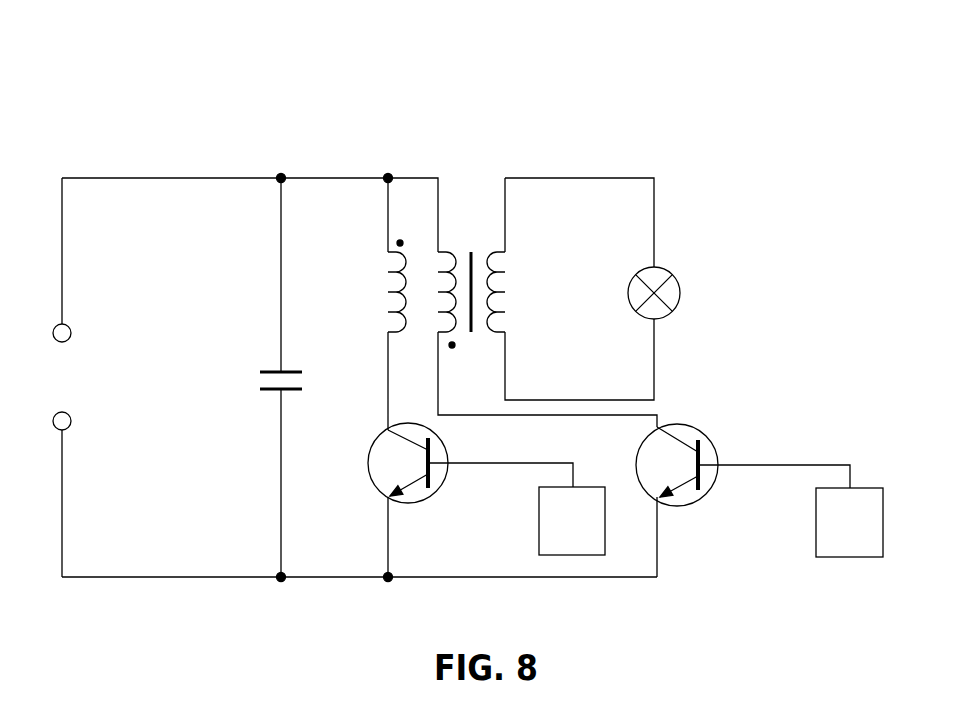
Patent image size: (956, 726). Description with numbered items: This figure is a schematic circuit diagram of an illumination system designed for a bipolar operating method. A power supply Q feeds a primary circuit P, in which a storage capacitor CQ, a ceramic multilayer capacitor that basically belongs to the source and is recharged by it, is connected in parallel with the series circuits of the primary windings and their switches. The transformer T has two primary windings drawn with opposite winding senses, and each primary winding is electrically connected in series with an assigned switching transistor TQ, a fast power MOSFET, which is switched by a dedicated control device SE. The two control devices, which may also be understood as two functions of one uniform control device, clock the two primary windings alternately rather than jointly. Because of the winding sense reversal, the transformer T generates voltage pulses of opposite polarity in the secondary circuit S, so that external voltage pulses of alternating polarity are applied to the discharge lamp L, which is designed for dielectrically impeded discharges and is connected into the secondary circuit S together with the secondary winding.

The primary circuit P is at (171, 145).
The secondary circuit S is at (528, 145).
The transformer T is at (468, 192).
The power supply Q is at (46, 377).
The storage capacitor CQ is at (250, 377).
The discharge lamp L is at (674, 293).
The switching transistor TQ is at (609, 486).
The control device SE is at (711, 522).